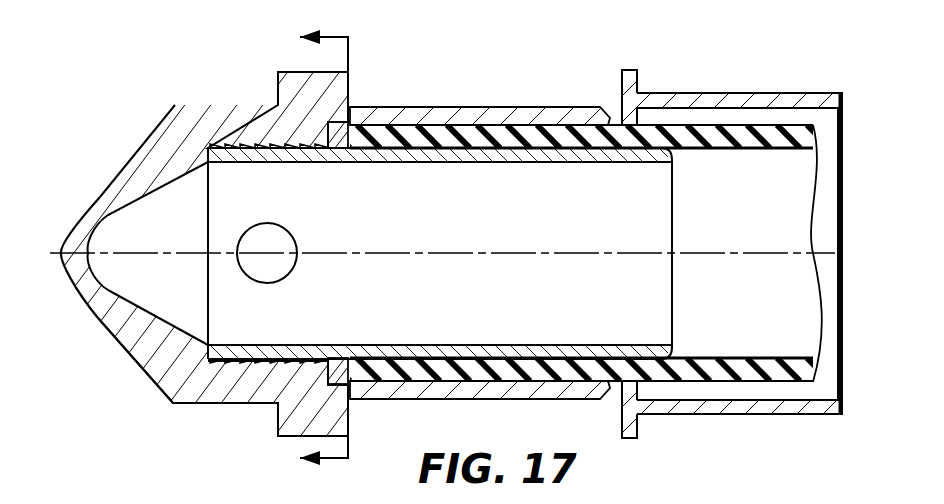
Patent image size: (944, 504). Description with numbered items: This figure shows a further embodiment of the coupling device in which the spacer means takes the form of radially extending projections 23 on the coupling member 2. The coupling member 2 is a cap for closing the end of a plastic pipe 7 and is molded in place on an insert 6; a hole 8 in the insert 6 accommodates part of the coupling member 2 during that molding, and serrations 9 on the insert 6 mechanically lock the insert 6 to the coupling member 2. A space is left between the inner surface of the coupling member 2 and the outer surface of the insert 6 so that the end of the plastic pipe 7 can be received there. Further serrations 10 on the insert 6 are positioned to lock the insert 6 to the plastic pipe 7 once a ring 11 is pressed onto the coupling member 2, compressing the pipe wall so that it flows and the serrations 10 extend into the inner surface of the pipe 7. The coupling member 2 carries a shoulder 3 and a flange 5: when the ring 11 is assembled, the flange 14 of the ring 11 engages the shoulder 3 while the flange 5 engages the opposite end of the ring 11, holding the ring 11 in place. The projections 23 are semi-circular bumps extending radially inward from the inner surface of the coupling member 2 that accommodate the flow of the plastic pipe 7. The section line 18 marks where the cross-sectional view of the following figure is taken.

The coupling member 2 is at (98, 326).
The shoulder 3 is at (287, 83).
The flange 5 is at (596, 108).
The insert 6 is at (680, 220).
The plastic pipe 7 is at (726, 153).
The hole 8 is at (258, 231).
The serrations 9 is at (197, 404).
The serrations 10 is at (396, 163).
The ring 11 is at (728, 86).
The flange 14 is at (636, 72).
The section line 18 is at (299, 249).
The radially extending projections 23 is at (358, 108).